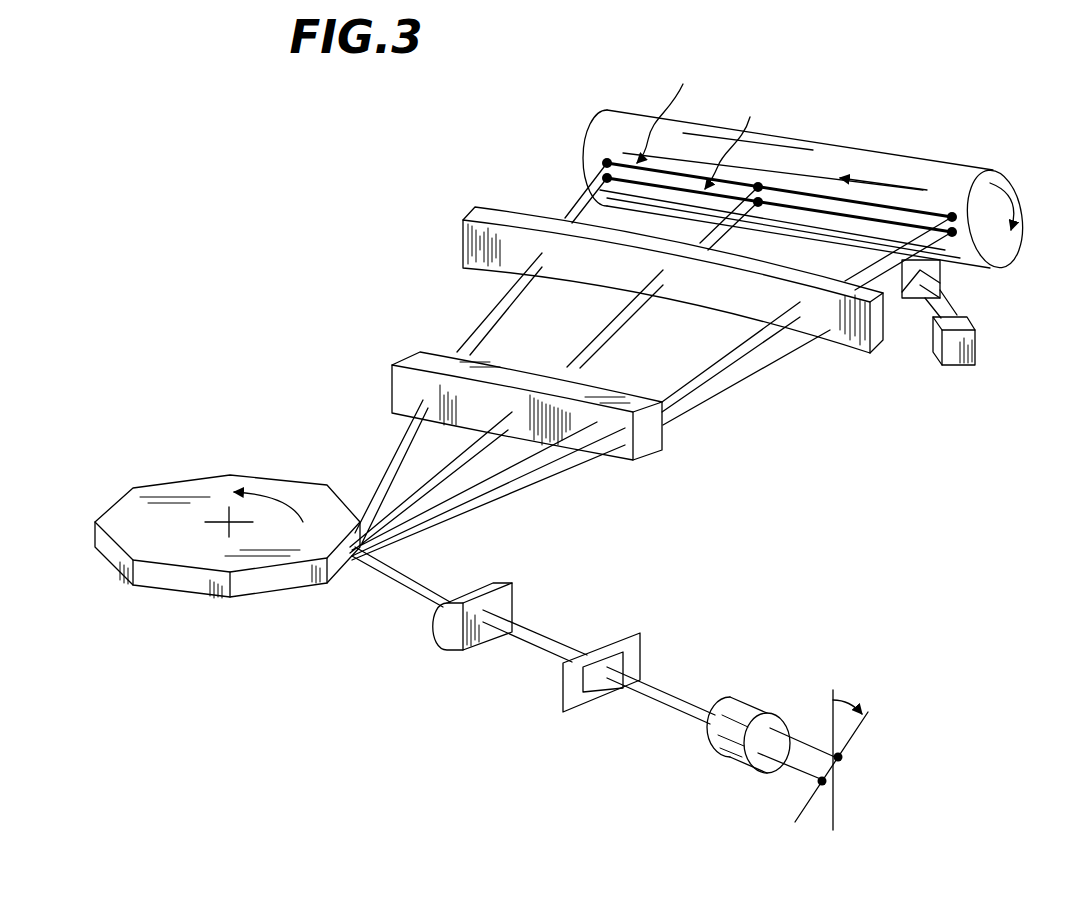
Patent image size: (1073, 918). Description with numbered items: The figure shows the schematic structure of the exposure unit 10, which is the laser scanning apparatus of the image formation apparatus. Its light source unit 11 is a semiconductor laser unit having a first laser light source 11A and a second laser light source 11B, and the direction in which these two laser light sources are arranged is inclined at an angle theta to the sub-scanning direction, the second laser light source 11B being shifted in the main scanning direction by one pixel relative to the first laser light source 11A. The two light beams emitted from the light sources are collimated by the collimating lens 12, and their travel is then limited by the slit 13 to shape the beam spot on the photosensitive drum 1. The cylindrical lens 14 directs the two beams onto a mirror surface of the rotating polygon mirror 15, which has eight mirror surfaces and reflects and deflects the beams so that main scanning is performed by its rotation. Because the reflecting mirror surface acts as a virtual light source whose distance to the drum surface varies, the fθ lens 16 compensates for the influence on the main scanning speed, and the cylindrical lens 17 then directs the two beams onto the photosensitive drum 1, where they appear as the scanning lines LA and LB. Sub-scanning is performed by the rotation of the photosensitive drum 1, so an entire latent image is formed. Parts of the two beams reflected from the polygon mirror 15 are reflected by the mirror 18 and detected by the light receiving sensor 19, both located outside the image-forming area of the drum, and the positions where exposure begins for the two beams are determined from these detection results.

The exposure unit 10 is at (209, 196).
The photosensitive drum 1 is at (952, 165).
The cylindrical lens 17 is at (463, 243).
The fθ lens 16 is at (648, 452).
The polygon mirror 15 is at (190, 475).
The cylindrical lens 14 is at (440, 652).
The slit 13 is at (573, 702).
The collimating lens 12 is at (733, 697).
The light source unit 11 is at (963, 832).
The first laser light source 11A is at (842, 760).
The second laser light source 11B is at (818, 782).
The mirror 18 is at (940, 280).
The light receiving sensor 19 is at (976, 343).